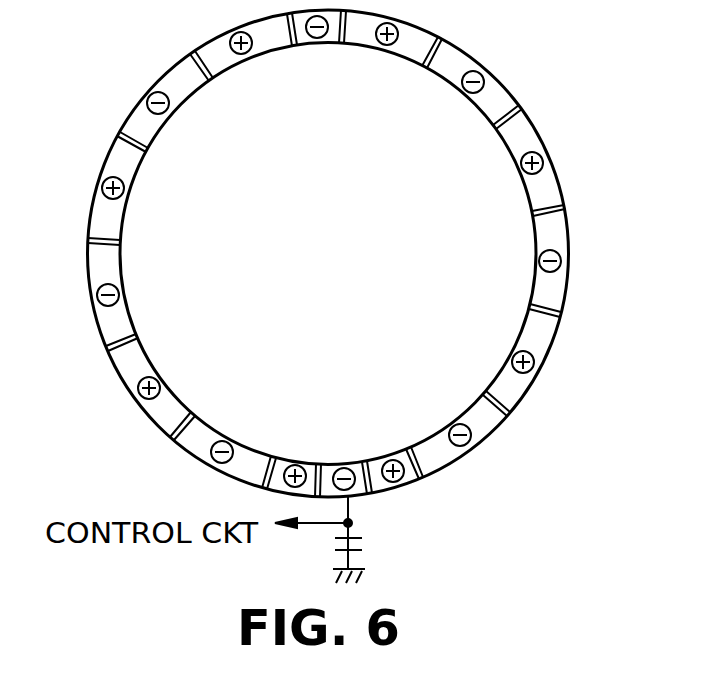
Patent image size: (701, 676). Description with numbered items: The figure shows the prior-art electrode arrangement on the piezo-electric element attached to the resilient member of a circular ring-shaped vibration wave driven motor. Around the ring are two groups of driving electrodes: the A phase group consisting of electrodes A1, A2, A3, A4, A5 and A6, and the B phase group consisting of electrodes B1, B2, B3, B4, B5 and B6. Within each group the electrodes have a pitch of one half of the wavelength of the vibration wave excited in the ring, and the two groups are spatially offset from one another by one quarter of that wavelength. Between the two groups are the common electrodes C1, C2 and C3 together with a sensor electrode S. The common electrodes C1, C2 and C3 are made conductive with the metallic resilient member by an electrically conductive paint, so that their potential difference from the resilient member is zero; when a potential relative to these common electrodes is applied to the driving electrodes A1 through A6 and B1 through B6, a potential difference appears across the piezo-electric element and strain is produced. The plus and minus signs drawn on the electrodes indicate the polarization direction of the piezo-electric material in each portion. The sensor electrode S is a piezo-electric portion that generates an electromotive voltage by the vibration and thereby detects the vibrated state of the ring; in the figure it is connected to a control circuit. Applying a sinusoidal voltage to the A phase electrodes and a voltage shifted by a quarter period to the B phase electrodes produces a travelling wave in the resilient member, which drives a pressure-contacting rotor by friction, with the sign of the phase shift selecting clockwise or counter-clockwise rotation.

The A phase driving electrode A1 is at (390, 50).
The A phase driving electrode A2 is at (465, 95).
The A phase driving electrode A3 is at (518, 167).
The A phase driving electrode A4 is at (535, 257).
The A phase driving electrode A5 is at (512, 357).
The A phase driving electrode A6 is at (453, 423).
The B phase driving electrode B1 is at (257, 57).
The B phase driving electrode B2 is at (178, 105).
The B phase driving electrode B3 is at (130, 202).
The B phase driving electrode B4 is at (128, 283).
The B phase driving electrode B5 is at (157, 365).
The B phase driving electrode B6 is at (220, 435).
The common electrode C1 is at (295, 462).
The common electrode C2 is at (388, 462).
The common electrode C3 is at (316, 47).
The sensor electrode S is at (343, 462).